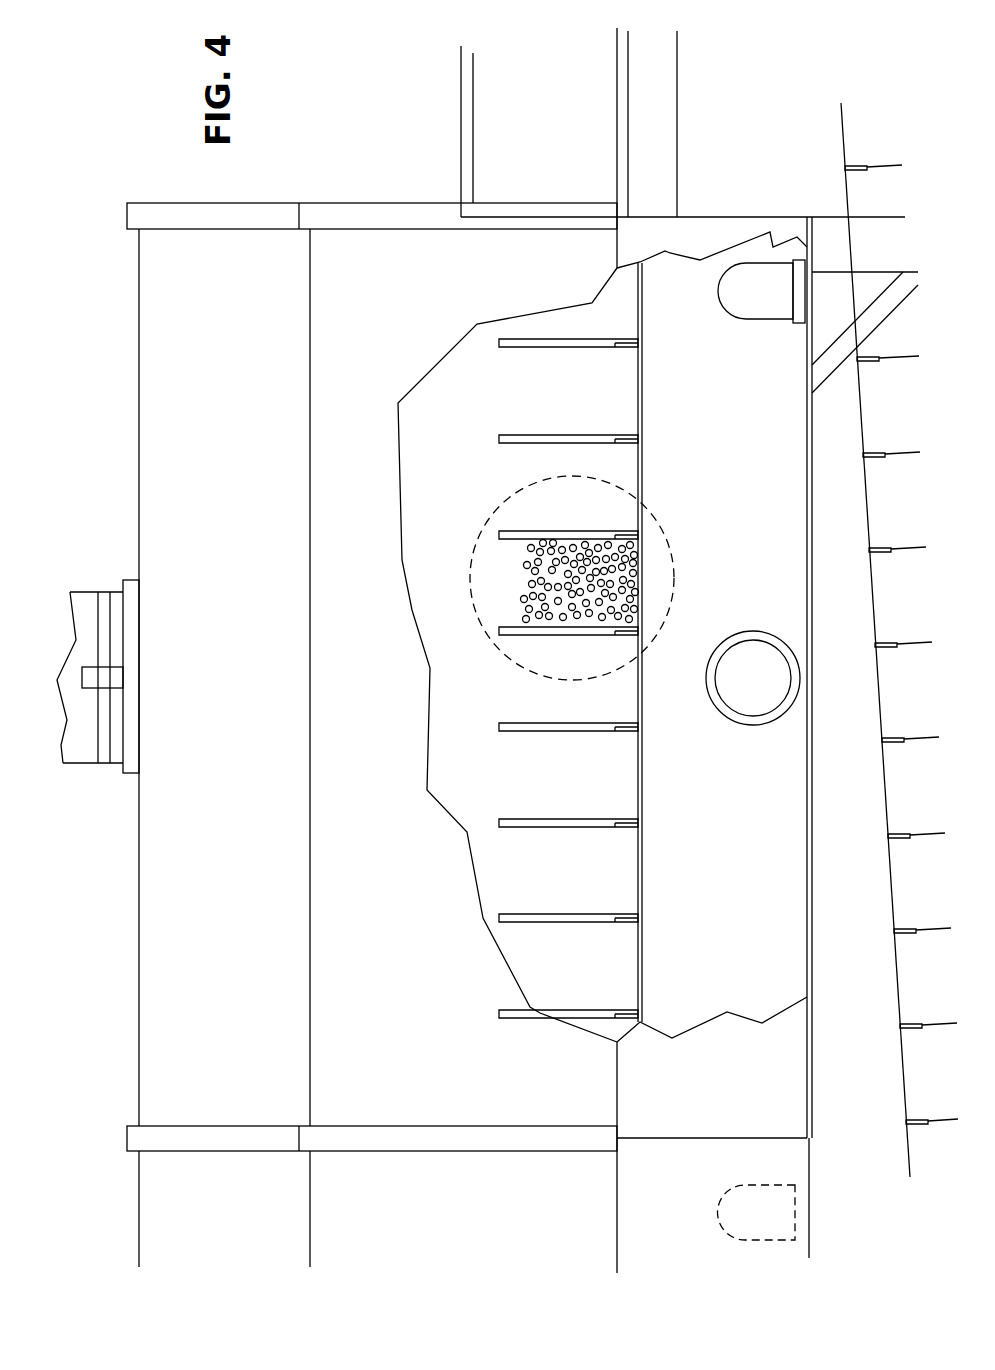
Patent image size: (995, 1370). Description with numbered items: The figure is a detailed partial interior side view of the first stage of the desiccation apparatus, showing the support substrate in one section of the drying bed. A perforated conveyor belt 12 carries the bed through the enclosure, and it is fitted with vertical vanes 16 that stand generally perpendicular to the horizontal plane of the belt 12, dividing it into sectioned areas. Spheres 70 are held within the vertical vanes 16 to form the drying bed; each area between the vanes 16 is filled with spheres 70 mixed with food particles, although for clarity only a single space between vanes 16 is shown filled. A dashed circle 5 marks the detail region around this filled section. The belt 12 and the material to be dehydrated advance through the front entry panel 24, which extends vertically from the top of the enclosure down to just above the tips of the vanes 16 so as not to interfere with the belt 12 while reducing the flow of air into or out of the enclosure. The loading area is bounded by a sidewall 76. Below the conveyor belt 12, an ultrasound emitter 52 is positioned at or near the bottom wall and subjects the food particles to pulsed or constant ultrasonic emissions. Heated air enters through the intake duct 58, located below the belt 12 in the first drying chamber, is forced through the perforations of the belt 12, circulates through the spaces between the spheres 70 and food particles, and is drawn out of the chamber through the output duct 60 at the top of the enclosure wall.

The detail region 5 is at (469, 571).
The conveyor belt 12 is at (643, 382).
The vertical vanes 16 is at (547, 344).
The front entry panel 24 is at (362, 203).
The ultrasound emitter 52 is at (768, 321).
The intake duct 58 is at (754, 631).
The output duct 60 is at (93, 765).
The spheres 70 is at (518, 612).
The right loading area sidewall 76 is at (461, 145).